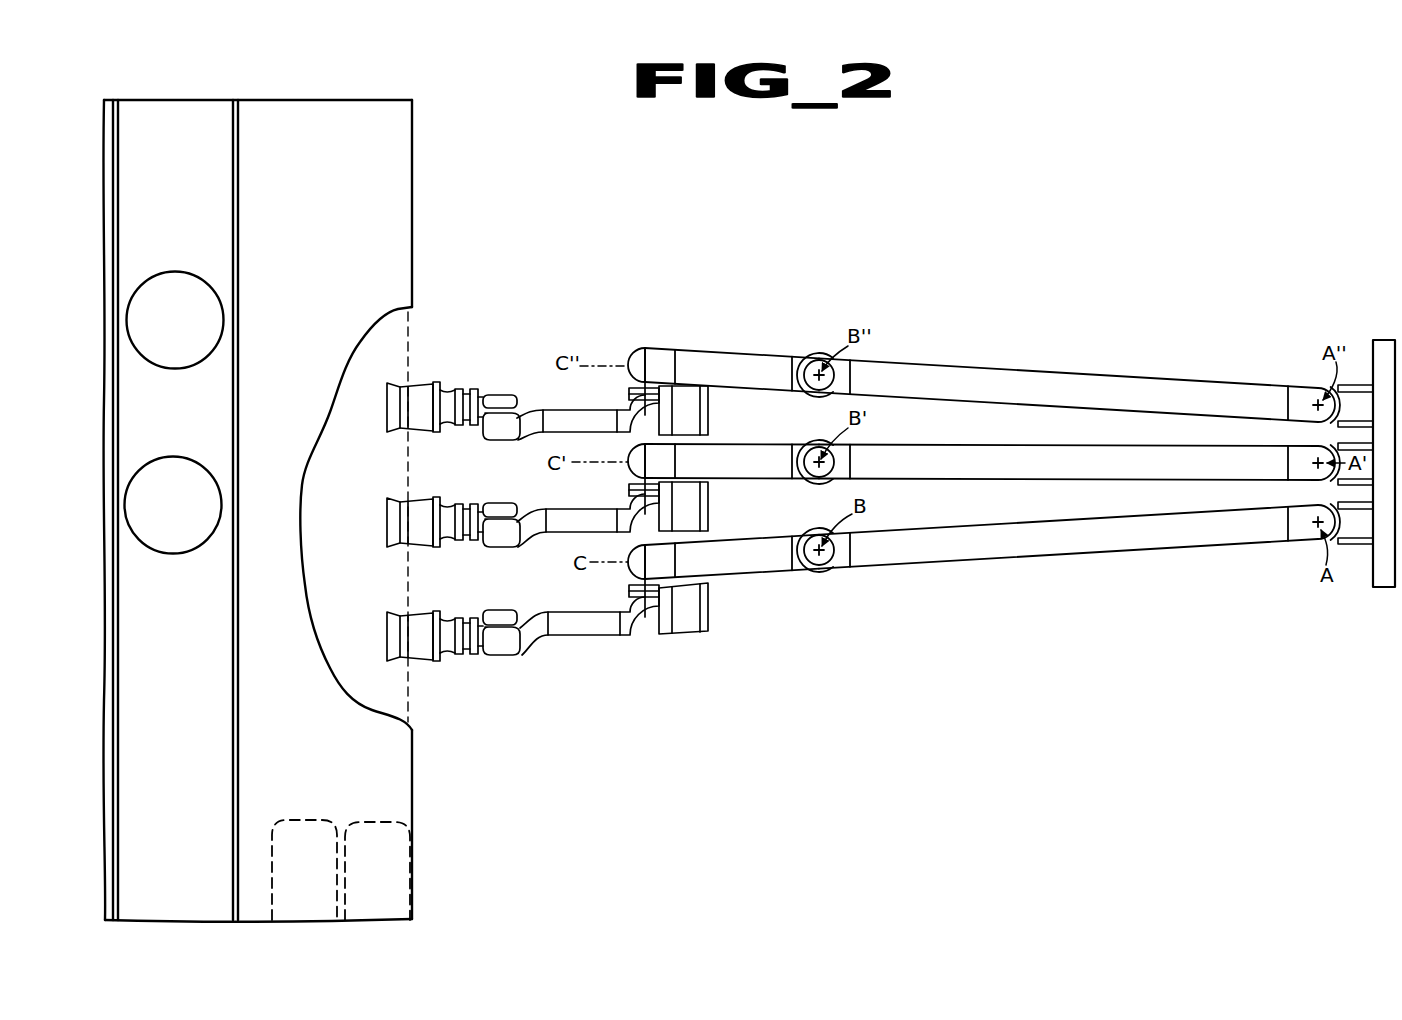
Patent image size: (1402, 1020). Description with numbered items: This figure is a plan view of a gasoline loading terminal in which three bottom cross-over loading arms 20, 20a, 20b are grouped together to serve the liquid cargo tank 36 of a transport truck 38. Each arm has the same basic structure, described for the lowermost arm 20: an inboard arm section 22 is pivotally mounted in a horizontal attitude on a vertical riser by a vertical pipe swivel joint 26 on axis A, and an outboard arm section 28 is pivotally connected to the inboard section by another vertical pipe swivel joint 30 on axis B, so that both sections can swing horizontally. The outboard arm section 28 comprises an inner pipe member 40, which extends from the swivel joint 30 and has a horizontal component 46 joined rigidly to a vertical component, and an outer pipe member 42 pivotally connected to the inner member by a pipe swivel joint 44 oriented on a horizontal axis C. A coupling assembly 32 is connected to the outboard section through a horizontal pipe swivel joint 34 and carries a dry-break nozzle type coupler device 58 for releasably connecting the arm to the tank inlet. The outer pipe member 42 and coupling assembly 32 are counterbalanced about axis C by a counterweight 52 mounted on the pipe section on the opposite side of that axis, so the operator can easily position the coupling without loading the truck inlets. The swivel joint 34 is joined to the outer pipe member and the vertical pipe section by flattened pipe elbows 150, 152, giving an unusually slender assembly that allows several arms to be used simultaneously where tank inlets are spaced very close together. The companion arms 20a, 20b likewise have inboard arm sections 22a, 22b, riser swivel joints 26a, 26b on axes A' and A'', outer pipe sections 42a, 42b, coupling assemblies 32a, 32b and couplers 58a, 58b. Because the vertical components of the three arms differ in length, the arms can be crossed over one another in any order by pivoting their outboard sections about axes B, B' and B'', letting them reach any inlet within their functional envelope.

The bottom cross-over loading arm 20 is at (984, 540).
The loading arm 20a is at (984, 460).
The loading arm 20b is at (984, 383).
The inboard arm section 22 is at (1198, 546).
The inboard arm section 22a is at (1222, 480).
The inboard arm section 22b is at (1224, 410).
The vertical pipe swivel joint 26 is at (1313, 503).
The vertical pipe swivel joint 26a is at (1313, 444).
The vertical pipe swivel joint 26b is at (1313, 386).
The outboard arm section 28 is at (984, 540).
The vertical pipe swivel joint 30 is at (826, 573).
The coupling assembly 32 is at (489, 626).
The coupling assembly 32a is at (452, 505).
The coupling assembly 32b is at (450, 392).
The horizontal pipe swivel joint 34 is at (500, 643).
The liquid cargo tank 36 is at (300, 782).
The transport truck 38 is at (423, 182).
The inner pipe member 40 is at (766, 538).
The outer pipe member 42 is at (588, 636).
The outer pipe section 42a is at (577, 509).
The outer pipe section 42b is at (577, 407).
The pipe swivel joint 44 is at (627, 592).
The horizontal component 46 is at (758, 571).
The counterweight 52 is at (708, 625).
The coupler device 58 is at (396, 632).
The coupler device 58a is at (385, 532).
The coupler device 58b is at (384, 432).
The flattened pipe elbow 150 is at (533, 645).
The flattened pipe elbow 152 is at (499, 611).